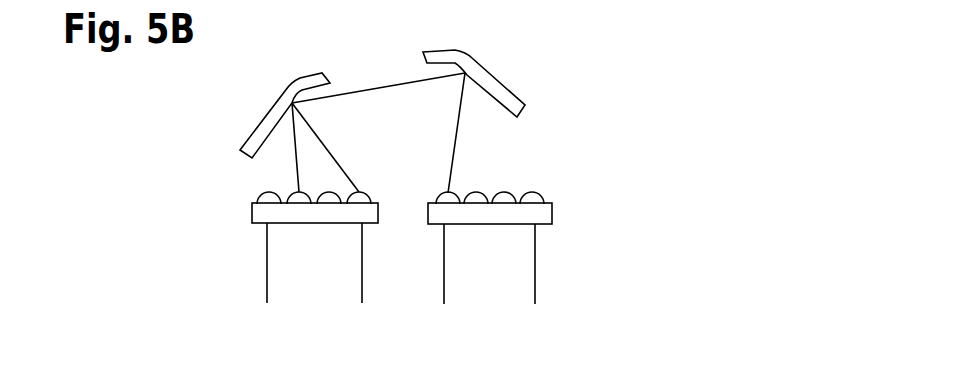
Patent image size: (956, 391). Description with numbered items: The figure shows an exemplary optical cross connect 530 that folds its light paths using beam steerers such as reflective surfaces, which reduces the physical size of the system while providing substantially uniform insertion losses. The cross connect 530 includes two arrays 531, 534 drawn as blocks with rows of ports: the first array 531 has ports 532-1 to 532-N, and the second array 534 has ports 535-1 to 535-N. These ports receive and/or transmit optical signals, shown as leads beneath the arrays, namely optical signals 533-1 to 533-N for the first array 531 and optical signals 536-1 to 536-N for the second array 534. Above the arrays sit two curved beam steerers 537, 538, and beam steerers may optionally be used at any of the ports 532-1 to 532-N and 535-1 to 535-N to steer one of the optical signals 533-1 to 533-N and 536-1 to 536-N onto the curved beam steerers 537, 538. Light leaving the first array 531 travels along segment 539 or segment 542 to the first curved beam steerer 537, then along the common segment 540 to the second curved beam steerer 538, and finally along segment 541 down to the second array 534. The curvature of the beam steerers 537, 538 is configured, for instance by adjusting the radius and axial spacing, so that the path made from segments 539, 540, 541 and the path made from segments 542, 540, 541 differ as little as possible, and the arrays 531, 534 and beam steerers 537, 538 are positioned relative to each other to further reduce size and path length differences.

The cross connect 530 is at (729, 157).
The array 531 is at (282, 254).
The port 532-1 is at (258, 196).
The port 532-N is at (367, 192).
The optical signal 533-1 is at (267, 280).
The optical signal 533-N is at (360, 282).
The array 534 is at (542, 265).
The port 535-1 is at (447, 195).
The port 535-N is at (545, 200).
The optical signal 536-1 is at (445, 293).
The optical signal 536-N is at (537, 282).
The curved beam steerer 537 is at (263, 119).
The curved beam steerer 538 is at (509, 88).
The segment 539 is at (298, 167).
The segment 540 is at (393, 85).
The segment 541 is at (457, 137).
The segment 542 is at (318, 138).